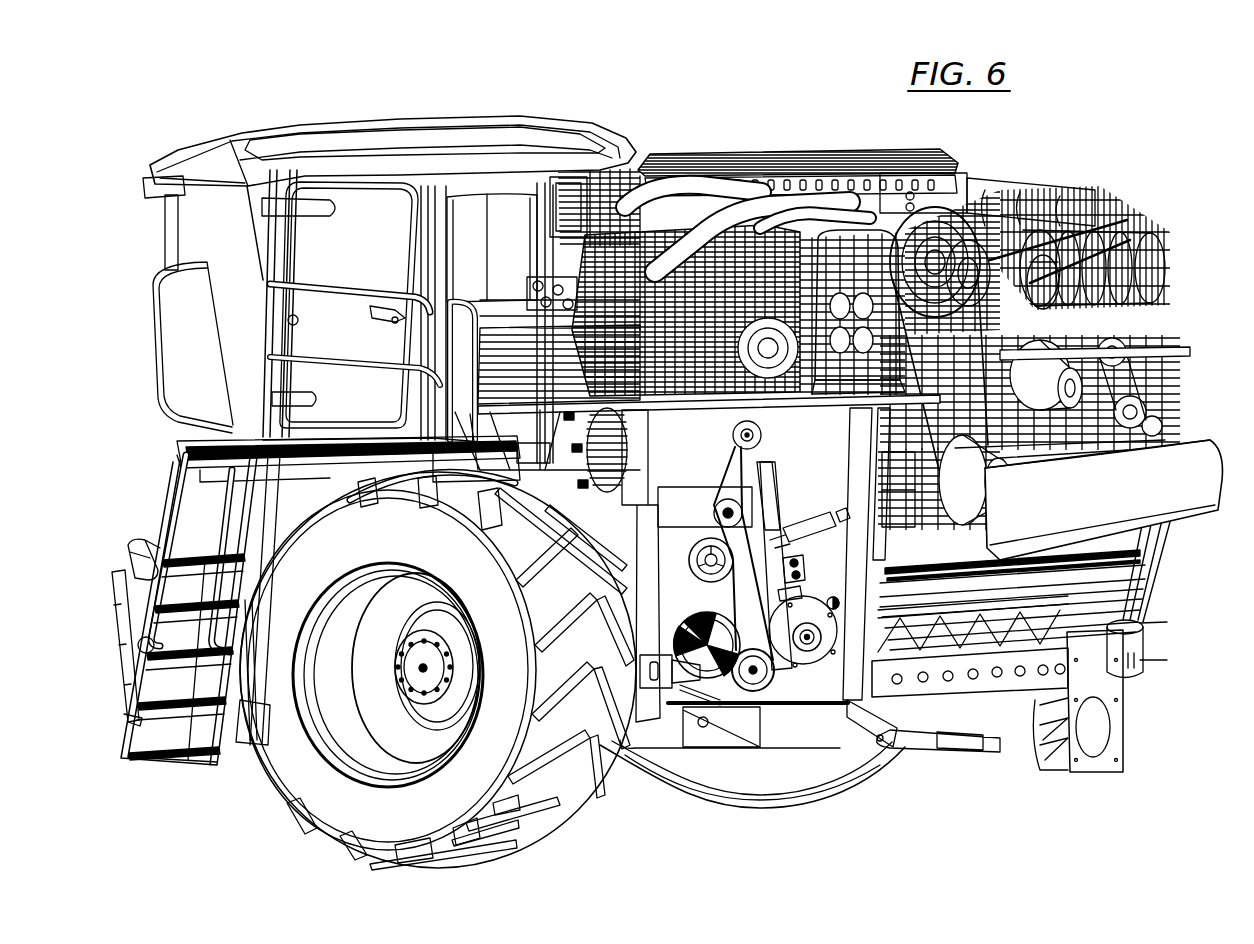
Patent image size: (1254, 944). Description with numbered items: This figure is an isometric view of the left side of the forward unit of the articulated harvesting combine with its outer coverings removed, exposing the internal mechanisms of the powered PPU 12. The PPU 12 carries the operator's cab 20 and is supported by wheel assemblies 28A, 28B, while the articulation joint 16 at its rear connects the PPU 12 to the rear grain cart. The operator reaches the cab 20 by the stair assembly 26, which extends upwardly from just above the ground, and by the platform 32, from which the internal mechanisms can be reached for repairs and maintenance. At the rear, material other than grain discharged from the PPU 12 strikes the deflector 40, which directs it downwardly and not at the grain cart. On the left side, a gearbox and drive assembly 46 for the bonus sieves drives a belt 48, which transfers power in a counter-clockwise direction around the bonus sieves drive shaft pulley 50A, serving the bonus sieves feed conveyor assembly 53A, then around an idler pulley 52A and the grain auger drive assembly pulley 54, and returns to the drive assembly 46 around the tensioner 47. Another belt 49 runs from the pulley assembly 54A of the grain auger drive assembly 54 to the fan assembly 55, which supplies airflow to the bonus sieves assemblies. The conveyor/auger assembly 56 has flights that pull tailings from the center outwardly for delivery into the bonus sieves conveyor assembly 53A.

The powered PPU 12 is at (660, 116).
The articulation joint 16 is at (967, 783).
The operator's cab 20 is at (425, 122).
The stair assembly 26 is at (173, 763).
The wheel assembly 28A is at (313, 800).
The wheel assembly 28B is at (885, 757).
The platform 32 is at (252, 437).
The deflector 40 is at (1182, 487).
The gearbox and drive assembly for the bonus sieves 46 is at (762, 437).
The tensioner 47 is at (767, 507).
The belt 48 is at (788, 590).
The belt 49 is at (737, 690).
The bonus sieves drive shaft pulley 50A is at (715, 583).
The idler pulley 52A is at (712, 505).
The bonus sieves feed conveyor assembly 53A is at (780, 566).
The grain auger drive assembly pulley 54 is at (775, 700).
The pulley assembly 54A is at (767, 697).
The fan assembly 55 is at (697, 697).
The conveyor/auger assembly 56 is at (807, 650).